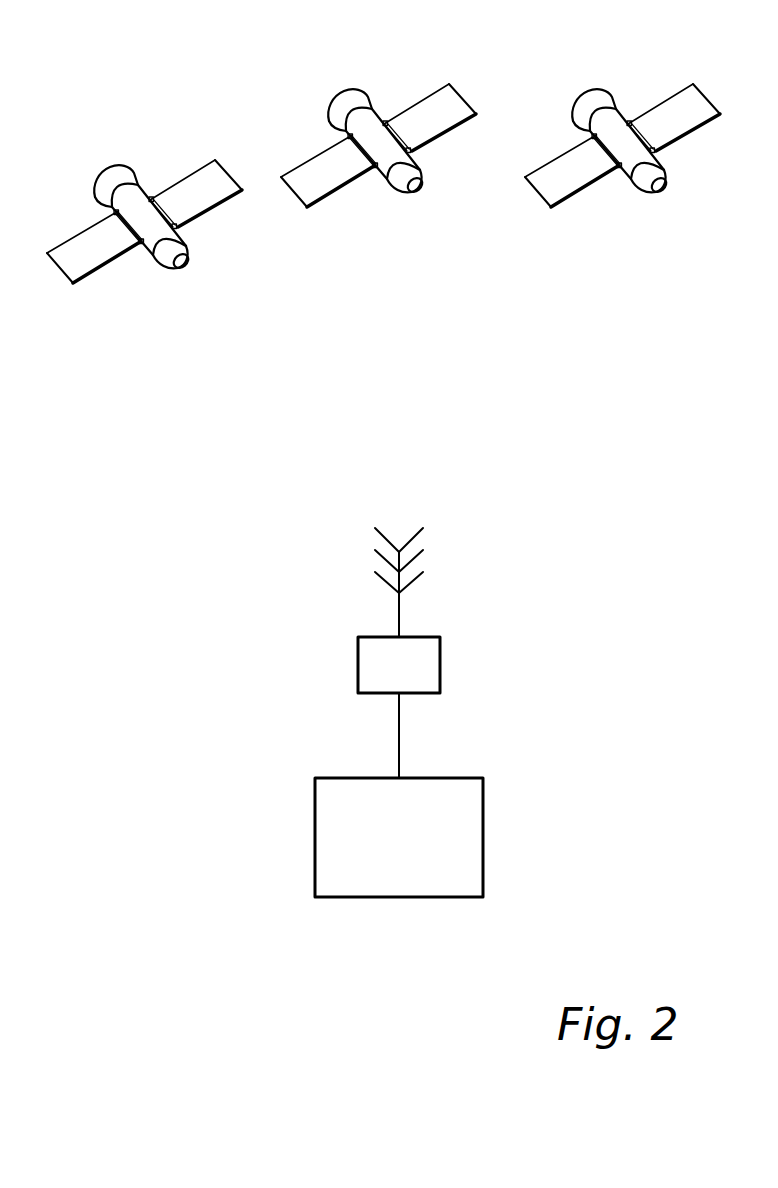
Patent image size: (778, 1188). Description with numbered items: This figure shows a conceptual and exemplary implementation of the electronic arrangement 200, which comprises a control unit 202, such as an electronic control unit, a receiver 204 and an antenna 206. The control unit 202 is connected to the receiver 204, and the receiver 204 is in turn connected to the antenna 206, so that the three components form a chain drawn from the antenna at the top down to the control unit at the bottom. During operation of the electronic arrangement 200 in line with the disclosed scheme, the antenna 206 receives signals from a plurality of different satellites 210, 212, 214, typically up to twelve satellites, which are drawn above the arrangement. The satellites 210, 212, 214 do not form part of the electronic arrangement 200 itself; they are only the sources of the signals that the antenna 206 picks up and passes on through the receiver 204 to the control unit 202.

The electronic arrangement 200 is at (214, 631).
The control unit 202 is at (483, 833).
The receiver 204 is at (440, 670).
The antenna 206 is at (399, 613).
The satellite 210 is at (133, 207).
The satellite 212 is at (368, 131).
The satellite 214 is at (612, 129).